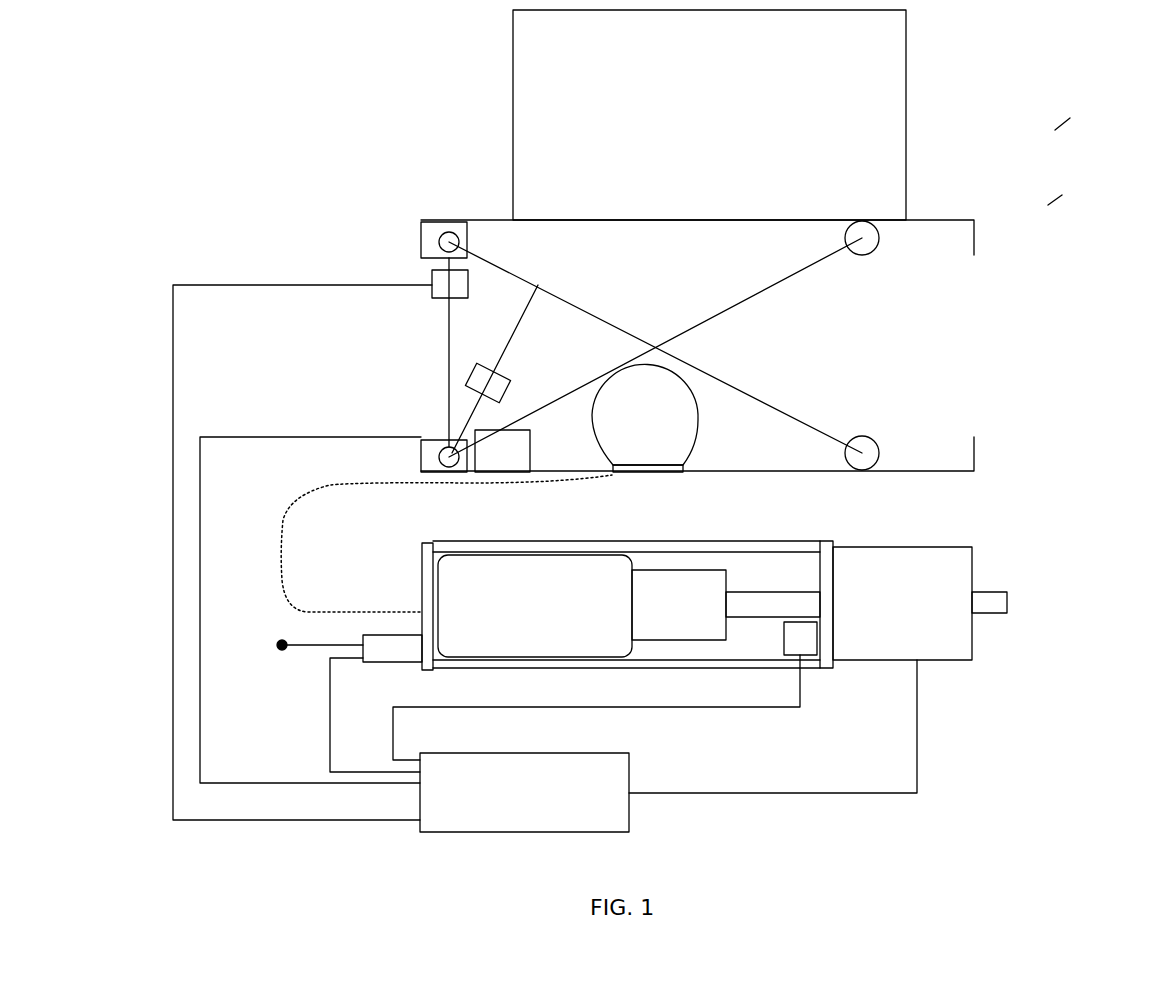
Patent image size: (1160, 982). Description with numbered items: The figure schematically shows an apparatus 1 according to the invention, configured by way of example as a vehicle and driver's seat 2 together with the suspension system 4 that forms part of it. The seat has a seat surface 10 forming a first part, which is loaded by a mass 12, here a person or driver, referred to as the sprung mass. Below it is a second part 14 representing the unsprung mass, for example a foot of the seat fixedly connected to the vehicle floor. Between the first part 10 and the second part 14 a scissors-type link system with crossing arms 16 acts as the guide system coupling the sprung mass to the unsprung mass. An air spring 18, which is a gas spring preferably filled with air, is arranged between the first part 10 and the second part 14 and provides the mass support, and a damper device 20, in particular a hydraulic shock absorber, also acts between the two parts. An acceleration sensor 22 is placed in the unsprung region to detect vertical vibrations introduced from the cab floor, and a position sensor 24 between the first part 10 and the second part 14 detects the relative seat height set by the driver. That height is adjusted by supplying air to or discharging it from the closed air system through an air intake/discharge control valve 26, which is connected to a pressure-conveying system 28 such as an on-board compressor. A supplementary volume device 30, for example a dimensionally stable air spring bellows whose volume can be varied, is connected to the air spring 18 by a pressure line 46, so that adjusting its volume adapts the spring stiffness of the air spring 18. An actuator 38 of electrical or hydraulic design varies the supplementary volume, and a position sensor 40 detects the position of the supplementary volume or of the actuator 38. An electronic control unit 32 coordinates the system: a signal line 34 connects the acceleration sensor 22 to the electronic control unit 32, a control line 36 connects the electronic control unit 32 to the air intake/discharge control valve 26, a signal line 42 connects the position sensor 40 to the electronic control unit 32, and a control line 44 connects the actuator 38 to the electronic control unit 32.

The apparatus 1 is at (1055, 132).
The vehicle and driver's seat 2 is at (1046, 208).
The suspension system 4 is at (348, 234).
The seat surface 10 is at (955, 220).
The mass 12 is at (875, 78).
The second part 14 is at (935, 470).
The scissor arms 16 is at (765, 294).
The air spring 18 is at (700, 428).
The damper device 20 is at (515, 373).
The acceleration sensor 22 is at (523, 453).
The position sensor 24 is at (432, 275).
The air intake/discharge control valve 26 is at (375, 660).
The pressure-conveying system 28 is at (282, 640).
The supplementary volume device 30 is at (640, 551).
The electronic control unit 32 is at (600, 768).
The signal line 34 is at (292, 437).
The control line 36 is at (330, 690).
The actuator 38 is at (950, 582).
The position sensor 40 is at (805, 642).
The position sensor-actuator signal line 42 is at (395, 727).
The actuator-supplementary volume control line 44 is at (917, 752).
The air spring-supplementary volume pressure line 46 is at (282, 520).